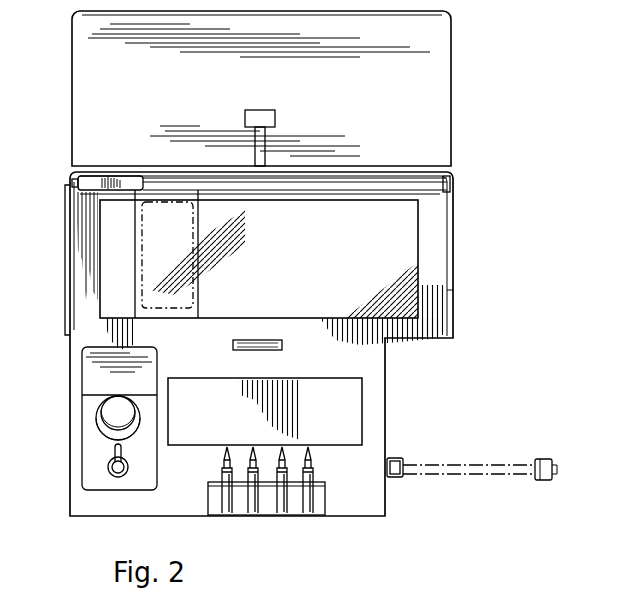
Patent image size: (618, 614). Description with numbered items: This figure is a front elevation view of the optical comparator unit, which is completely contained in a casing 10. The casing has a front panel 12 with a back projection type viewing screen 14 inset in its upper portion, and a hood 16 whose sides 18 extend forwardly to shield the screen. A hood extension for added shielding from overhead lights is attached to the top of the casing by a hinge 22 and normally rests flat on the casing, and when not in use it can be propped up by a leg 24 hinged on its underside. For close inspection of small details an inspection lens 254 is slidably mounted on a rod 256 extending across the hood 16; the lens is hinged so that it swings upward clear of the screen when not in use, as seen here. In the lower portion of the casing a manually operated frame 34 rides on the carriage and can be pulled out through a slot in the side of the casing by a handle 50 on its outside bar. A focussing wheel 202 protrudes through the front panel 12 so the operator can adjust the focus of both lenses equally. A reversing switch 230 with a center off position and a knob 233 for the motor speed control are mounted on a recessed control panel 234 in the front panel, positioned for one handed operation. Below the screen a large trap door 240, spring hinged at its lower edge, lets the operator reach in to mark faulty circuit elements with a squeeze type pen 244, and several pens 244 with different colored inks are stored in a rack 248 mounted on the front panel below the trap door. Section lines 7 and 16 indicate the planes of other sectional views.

The casing 10 is at (392, 396).
The front panel 12 is at (440, 241).
The viewing screen 14 is at (413, 260).
The hood 16 is at (420, 173).
The sides 18 is at (66, 256).
The hinge 22 is at (437, 93).
The leg 24 is at (262, 134).
The frame 34 is at (512, 460).
The handle 50 is at (404, 464).
The section line 7- 7 is at (35, 325).
The focussing wheel 202 is at (273, 348).
The reversing switch 230 is at (110, 468).
The knob 233 is at (108, 410).
The control panel 234 is at (93, 445).
The trap door 240 is at (352, 421).
The pen 244 is at (280, 507).
The rack 248 is at (210, 496).
The inspection lens 254 is at (110, 181).
The rod 256 is at (332, 188).